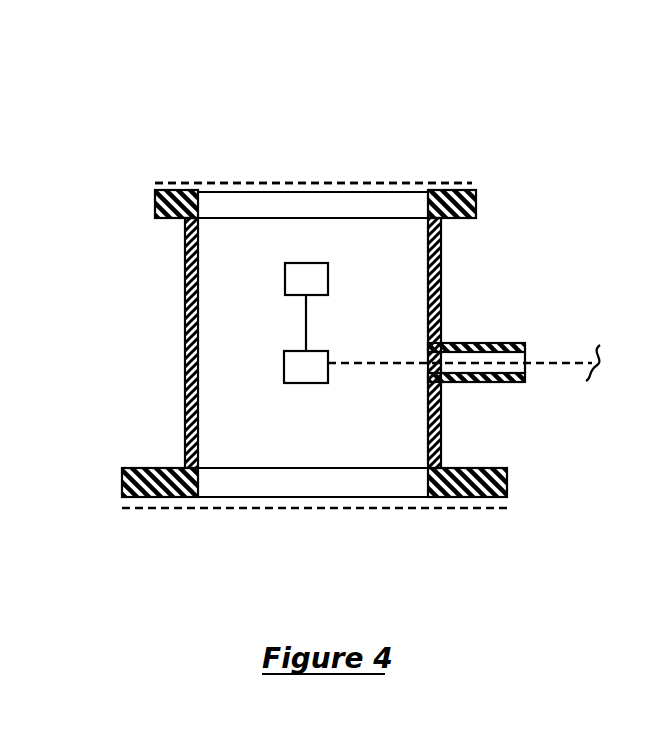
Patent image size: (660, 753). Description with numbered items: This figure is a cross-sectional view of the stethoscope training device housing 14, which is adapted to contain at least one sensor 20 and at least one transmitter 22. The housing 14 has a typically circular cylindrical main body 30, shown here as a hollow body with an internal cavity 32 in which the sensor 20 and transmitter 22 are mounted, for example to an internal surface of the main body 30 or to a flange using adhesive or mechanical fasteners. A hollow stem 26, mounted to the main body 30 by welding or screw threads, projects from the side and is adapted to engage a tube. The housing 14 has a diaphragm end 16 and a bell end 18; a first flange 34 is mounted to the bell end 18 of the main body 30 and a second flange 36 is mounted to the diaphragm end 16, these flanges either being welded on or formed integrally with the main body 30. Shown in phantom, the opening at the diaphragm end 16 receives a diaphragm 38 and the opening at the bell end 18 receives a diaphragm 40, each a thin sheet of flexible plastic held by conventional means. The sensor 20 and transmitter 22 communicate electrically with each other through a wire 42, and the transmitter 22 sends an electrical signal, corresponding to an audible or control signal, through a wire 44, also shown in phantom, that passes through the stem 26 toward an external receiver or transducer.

The stethoscope training device housing 14 is at (367, 125).
The diaphragm end 16 is at (262, 520).
The bell end 18 is at (260, 168).
The sensor 20 is at (287, 265).
The transmitter 22 is at (320, 380).
The stem 26 is at (484, 343).
The main body 30 is at (185, 311).
The internal cavity 32 is at (368, 223).
The first flange 34 is at (473, 190).
The second flange 36 is at (507, 497).
The diaphragm 38 is at (370, 508).
The diaphragm 40 is at (318, 183).
The wire 42 is at (306, 316).
The wire 44 is at (548, 365).